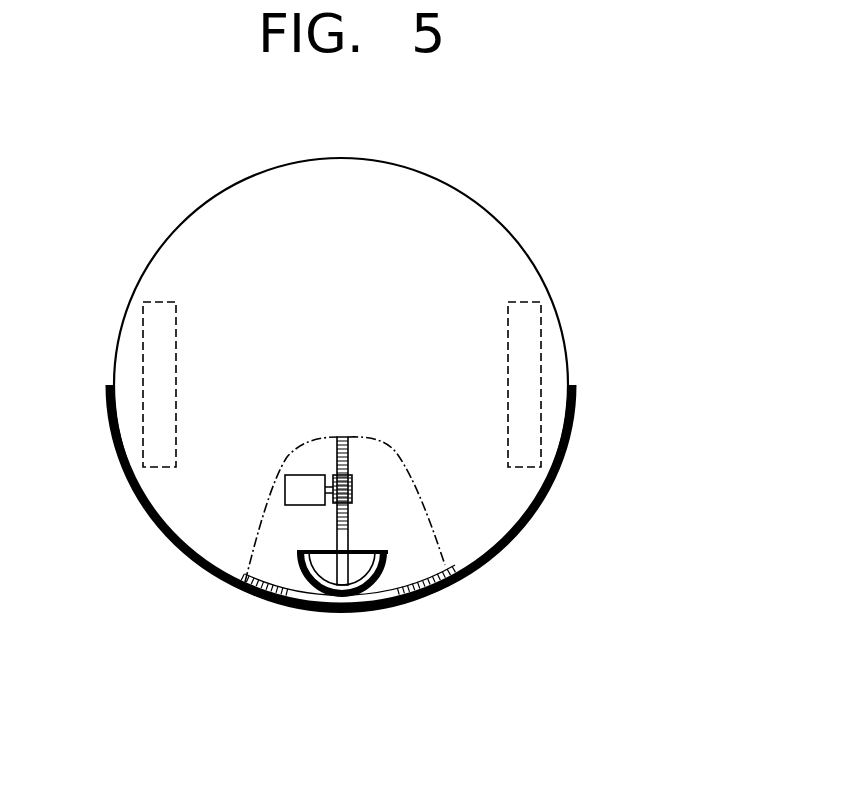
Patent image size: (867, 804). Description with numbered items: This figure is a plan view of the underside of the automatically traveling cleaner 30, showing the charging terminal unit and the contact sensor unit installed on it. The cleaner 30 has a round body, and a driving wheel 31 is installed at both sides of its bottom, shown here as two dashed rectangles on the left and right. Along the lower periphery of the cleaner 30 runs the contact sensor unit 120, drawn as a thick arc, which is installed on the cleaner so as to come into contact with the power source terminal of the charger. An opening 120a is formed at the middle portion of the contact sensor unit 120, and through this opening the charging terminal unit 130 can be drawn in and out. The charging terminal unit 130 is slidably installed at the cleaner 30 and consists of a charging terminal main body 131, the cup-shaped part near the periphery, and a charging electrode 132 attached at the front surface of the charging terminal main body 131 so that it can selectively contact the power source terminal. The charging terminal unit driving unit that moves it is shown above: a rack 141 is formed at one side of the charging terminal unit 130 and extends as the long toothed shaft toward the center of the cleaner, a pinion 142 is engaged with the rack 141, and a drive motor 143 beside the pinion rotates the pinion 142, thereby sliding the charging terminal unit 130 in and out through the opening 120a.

The automatically traveling cleaner 30 is at (513, 228).
The driving wheel 31 is at (143, 338).
The contact sensor unit 120 is at (495, 550).
The opening 120a is at (388, 607).
The charging terminal unit 130 is at (318, 641).
The charging terminal main body 131 is at (291, 597).
The charging electrode 132 is at (316, 598).
The rack 141 is at (337, 533).
The pinion 142 is at (333, 502).
The drive motor 143 is at (297, 488).